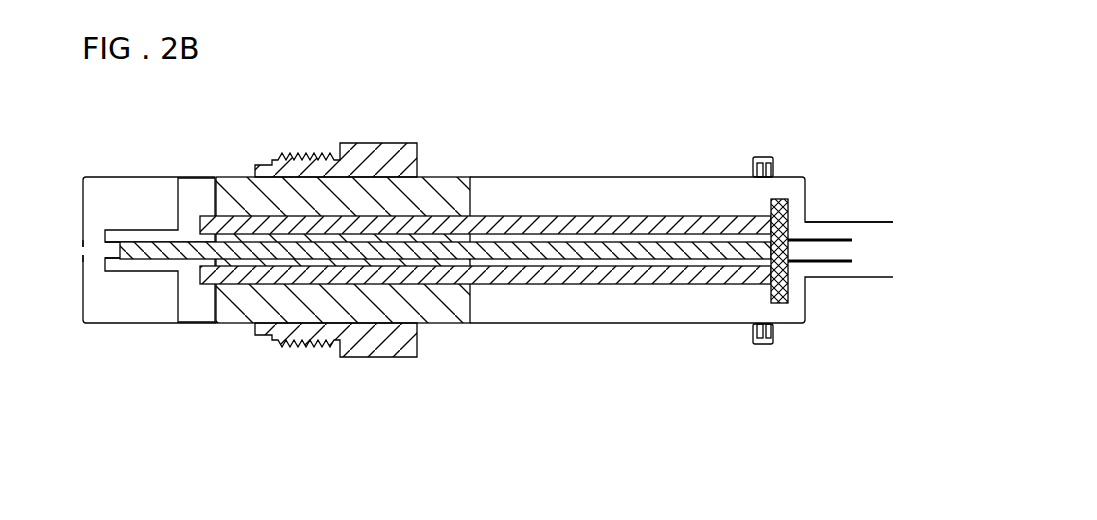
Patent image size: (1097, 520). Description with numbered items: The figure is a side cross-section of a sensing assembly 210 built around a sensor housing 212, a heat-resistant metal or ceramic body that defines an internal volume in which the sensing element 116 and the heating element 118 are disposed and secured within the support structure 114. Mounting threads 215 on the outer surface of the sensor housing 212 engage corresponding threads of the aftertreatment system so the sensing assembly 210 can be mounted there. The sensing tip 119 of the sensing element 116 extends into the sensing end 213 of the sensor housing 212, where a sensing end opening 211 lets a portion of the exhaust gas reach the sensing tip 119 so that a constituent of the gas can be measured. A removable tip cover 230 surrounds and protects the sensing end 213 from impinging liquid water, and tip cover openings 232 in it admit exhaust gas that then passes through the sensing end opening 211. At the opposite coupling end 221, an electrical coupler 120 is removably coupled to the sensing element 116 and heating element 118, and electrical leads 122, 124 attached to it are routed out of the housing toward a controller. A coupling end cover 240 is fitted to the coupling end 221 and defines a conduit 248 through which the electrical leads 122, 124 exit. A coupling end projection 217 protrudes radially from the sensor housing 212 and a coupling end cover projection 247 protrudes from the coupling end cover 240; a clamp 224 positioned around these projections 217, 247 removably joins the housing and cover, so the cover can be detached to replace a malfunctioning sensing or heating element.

The sensing assembly 210 is at (675, 97).
The tip cover 230 is at (118, 325).
The tip cover openings 232 is at (158, 325).
The sensing end opening 211 is at (104, 249).
The sensing tip 119 is at (145, 240).
The sensing end 213 is at (133, 231).
The support structure 114 is at (438, 300).
The mounting threads 215 is at (305, 355).
The sensor housing 212 is at (503, 325).
The coupling end cover 240 is at (803, 325).
The conduit 248 is at (877, 278).
The heating element 118 is at (600, 214).
The sensing element 116 is at (498, 250).
The electrical coupler 120 is at (778, 198).
The electrical lead 122 is at (813, 278).
The electrical lead 124 is at (825, 236).
The coupling end 221 is at (723, 174).
The coupling end projection 217 is at (758, 347).
The clamp 224 is at (753, 343).
The coupling end cover projection 247 is at (768, 345).